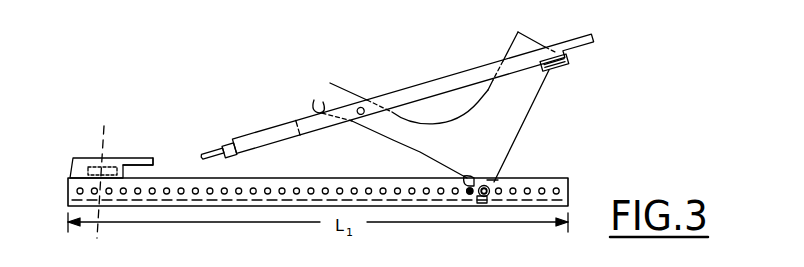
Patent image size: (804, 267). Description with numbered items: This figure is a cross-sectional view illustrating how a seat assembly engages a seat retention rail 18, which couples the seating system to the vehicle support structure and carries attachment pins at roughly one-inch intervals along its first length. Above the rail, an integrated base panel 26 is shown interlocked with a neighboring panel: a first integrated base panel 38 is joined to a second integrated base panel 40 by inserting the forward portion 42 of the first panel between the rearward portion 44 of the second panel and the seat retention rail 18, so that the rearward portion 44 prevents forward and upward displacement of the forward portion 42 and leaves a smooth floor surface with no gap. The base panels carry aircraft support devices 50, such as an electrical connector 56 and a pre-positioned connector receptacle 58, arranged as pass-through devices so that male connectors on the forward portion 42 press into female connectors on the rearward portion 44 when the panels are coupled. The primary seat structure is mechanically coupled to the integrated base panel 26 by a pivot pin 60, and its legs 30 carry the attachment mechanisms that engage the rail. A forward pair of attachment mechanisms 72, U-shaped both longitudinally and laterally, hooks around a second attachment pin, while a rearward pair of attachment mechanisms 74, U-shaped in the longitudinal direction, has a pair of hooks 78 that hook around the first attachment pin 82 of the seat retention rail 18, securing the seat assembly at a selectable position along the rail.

The seat retention rail 18 is at (569, 189).
The integrated base panel 26 is at (436, 79).
The legs 30 is at (527, 120).
The first integrated base panel 38 is at (275, 121).
The second integrated base panel 40 is at (122, 158).
The forward portion 42 is at (240, 137).
The rearward portion 44 is at (150, 168).
The aircraft support devices 50 is at (568, 80).
The electrical connector 56 is at (225, 147).
The pre-positioned connector receptacle 58 is at (111, 195).
The pivot pin 60 is at (368, 104).
The forward pair of attachment mechanisms 72 is at (323, 102).
The rearward pair of attachment mechanisms 74 is at (477, 200).
The hooks 78 is at (466, 176).
The first attachment pin 82 is at (490, 182).